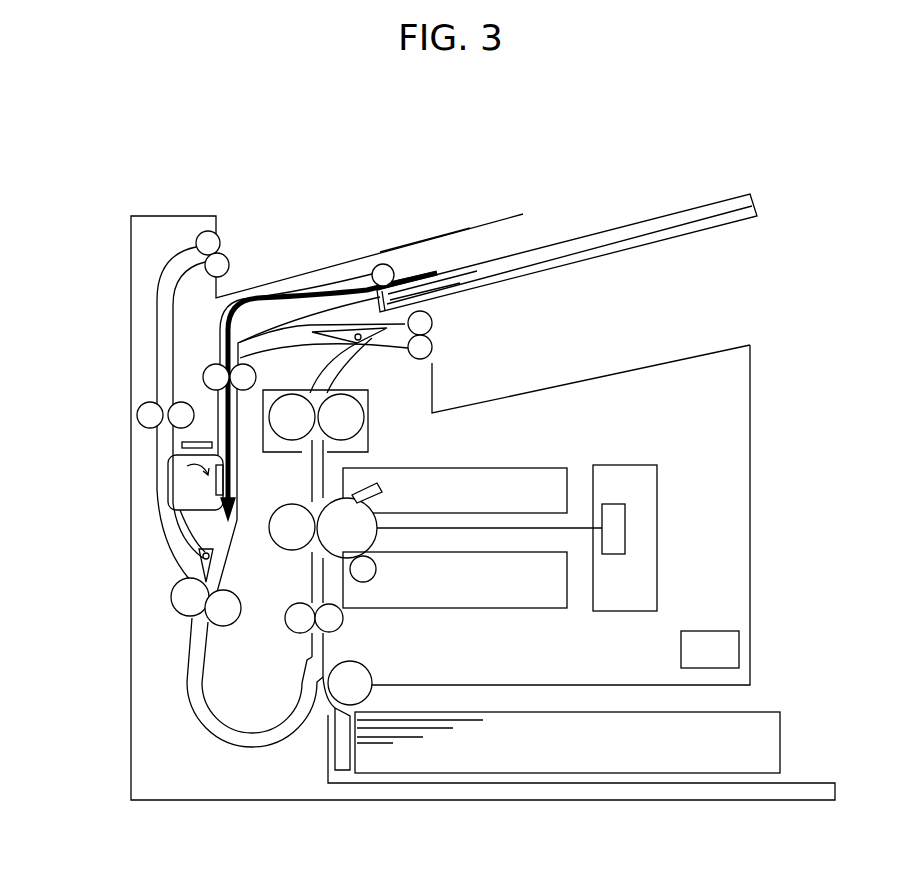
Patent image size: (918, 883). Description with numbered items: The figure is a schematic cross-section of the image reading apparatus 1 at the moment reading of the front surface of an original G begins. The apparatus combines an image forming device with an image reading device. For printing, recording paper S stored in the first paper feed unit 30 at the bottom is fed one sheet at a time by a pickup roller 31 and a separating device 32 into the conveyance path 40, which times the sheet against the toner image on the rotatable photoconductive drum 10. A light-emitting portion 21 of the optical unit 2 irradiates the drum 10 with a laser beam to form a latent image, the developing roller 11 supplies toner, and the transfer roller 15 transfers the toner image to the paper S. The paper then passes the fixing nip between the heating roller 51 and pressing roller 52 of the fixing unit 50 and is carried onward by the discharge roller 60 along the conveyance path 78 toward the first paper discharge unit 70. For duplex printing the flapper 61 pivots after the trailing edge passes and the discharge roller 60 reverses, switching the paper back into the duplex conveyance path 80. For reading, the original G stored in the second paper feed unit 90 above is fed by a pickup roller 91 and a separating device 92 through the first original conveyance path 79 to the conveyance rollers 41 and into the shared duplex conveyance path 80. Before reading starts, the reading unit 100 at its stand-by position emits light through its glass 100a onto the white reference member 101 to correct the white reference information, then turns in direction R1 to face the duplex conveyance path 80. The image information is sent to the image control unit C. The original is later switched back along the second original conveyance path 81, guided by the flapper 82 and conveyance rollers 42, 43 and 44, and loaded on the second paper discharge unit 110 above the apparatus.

The image reading apparatus 1 is at (733, 490).
The optical unit 2 is at (628, 465).
The photoconductive drum 10 is at (375, 500).
The developing roller 11 is at (370, 573).
The transfer roller 15 is at (292, 550).
The light-emitting portion 21 is at (627, 537).
The first paper feed unit 30 is at (795, 783).
The pickup roller 31 is at (360, 680).
The separating device 32 is at (343, 757).
The conveyance path 40 is at (334, 620).
The conveyance rollers 41 is at (205, 377).
The conveyance rollers 42 is at (185, 597).
The conveyance rollers 43 is at (150, 415).
The conveyance rollers 44 is at (208, 243).
The fixing unit 50 is at (367, 446).
The heating roller 51 is at (357, 413).
The pressing roller 52 is at (292, 437).
The discharge roller 60 is at (424, 322).
The flapper 61 is at (367, 344).
The first paper discharge unit 70 is at (643, 368).
The conveyance path 78 is at (324, 643).
The first original conveyance path 79 is at (330, 286).
The duplex conveyance path 80 is at (240, 420).
The second original conveyance path 81 is at (162, 332).
The flapper 82 is at (200, 567).
The second paper feed unit 90 is at (619, 251).
The pickup roller 91 is at (384, 272).
The separating device 92 is at (387, 306).
The reading unit 100 is at (178, 494).
The glass 100a is at (218, 482).
The white reference member 101 is at (180, 445).
The second paper discharge unit 110 is at (402, 246).
The image control unit C is at (728, 650).
The original G is at (281, 294).
The direction R1 is at (195, 470).
The recording paper S is at (312, 662).